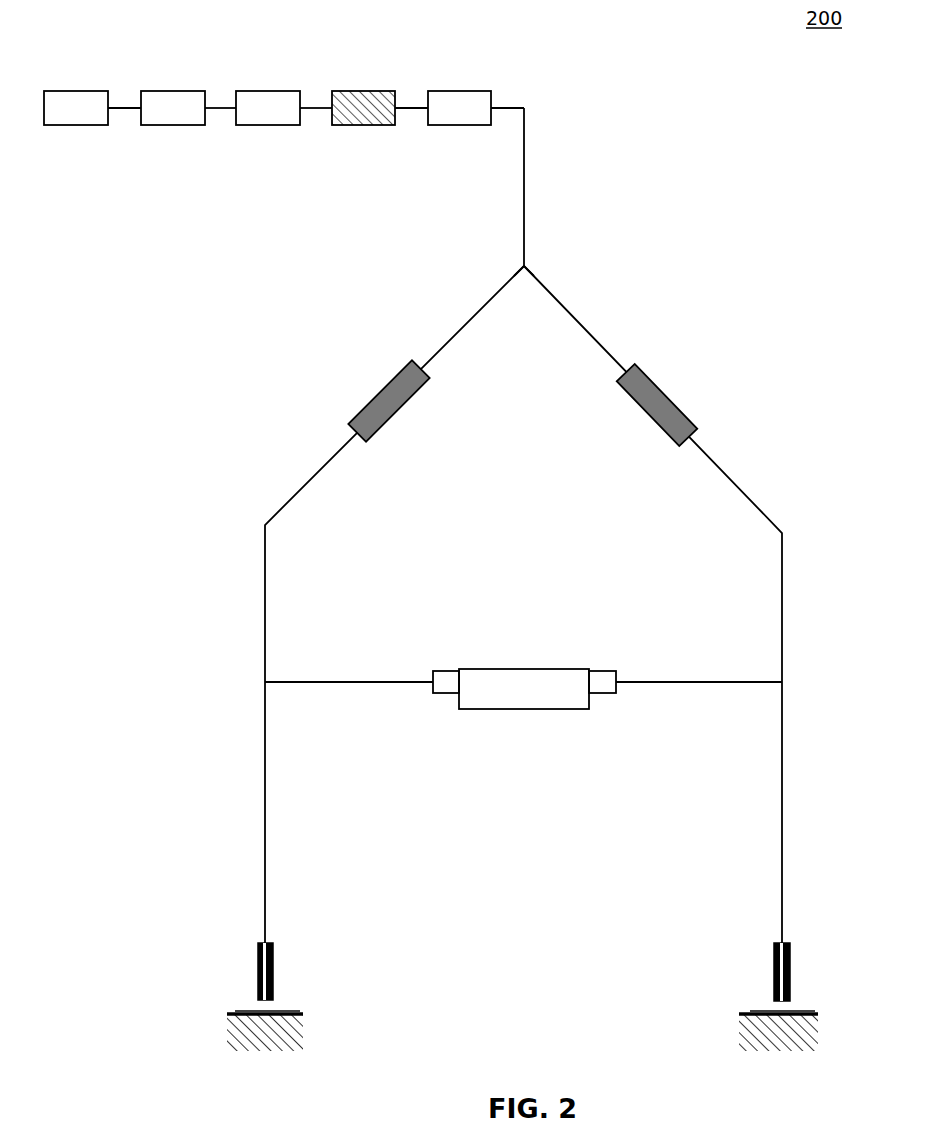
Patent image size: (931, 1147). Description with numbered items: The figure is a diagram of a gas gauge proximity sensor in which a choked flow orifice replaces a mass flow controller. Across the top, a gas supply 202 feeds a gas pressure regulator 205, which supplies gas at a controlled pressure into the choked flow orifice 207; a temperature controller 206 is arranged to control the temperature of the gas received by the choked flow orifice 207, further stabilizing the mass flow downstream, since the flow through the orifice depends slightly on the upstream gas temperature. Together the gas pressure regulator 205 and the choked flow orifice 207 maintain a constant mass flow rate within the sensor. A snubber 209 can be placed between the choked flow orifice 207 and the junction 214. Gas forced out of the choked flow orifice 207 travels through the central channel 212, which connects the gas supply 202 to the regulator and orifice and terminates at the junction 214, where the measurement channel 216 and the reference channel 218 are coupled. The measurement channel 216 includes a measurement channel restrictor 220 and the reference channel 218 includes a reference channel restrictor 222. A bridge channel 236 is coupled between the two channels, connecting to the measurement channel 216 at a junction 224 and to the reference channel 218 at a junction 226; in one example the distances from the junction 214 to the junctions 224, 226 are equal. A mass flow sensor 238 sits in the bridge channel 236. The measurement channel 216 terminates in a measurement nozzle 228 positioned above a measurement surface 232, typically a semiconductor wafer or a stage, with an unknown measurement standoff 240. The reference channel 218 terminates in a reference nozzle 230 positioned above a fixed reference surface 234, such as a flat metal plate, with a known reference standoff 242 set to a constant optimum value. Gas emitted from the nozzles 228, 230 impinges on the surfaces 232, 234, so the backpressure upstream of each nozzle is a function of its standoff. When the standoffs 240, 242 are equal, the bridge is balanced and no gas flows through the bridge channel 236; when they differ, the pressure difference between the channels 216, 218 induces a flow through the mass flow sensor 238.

The gas supply 202 is at (85, 91).
The gas pressure regulator 205 is at (178, 91).
The temperature controller 206 is at (272, 91).
The choked flow orifice 207 is at (372, 91).
The snubber 209 is at (466, 91).
The central channel 212 is at (510, 108).
The junction 214 is at (528, 263).
The measurement channel 216 is at (457, 337).
The reference channel 218 is at (557, 300).
The measurement channel restrictor 220 is at (416, 400).
The reference channel restrictor 222 is at (683, 420).
The junction 224 is at (265, 681).
The junction 226 is at (782, 681).
The measurement nozzle 228 is at (258, 958).
The reference nozzle 230 is at (790, 958).
The measurement surface 232 is at (302, 1012).
The reference surface 234 is at (740, 1013).
The bridge channel 236 is at (347, 681).
The mass flow sensor 238 is at (535, 669).
The measurement standoff 240 is at (265, 1010).
The reference standoff 242 is at (777, 1008).